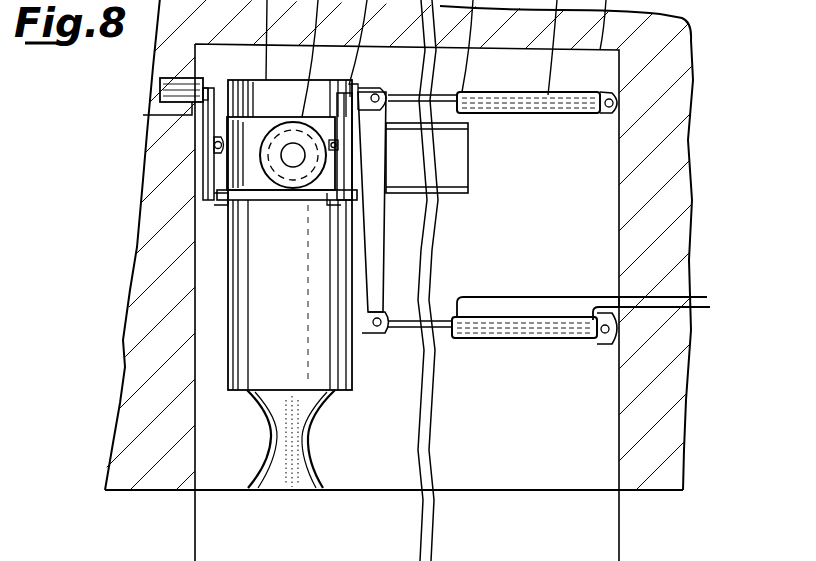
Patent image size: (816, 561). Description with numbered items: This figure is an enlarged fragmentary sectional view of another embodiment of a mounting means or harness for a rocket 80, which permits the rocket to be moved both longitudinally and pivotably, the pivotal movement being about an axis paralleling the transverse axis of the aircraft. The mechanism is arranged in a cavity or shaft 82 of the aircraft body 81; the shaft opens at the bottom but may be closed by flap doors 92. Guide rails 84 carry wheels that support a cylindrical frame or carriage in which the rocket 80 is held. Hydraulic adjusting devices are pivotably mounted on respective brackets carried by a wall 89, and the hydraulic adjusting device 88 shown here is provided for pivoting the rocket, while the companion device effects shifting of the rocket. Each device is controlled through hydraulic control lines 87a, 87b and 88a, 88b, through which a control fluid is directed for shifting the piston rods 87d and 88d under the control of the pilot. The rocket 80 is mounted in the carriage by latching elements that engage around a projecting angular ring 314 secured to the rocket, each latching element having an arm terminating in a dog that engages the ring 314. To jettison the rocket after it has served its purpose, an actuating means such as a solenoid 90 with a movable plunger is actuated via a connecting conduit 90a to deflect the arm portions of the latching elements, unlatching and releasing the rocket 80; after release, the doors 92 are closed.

The rocket 80 is at (237, 252).
The aircraft body 81 is at (678, 58).
The cavity or shaft 82 is at (563, 251).
The guide rail 84 is at (458, 162).
The hydraulic control line 87a is at (475, 68).
The hydraulic control line 87b is at (600, 57).
The piston rod 87d is at (403, 95).
The hydraulic adjusting device 88 is at (548, 332).
The hydraulic control line 88a is at (503, 297).
The hydraulic control line 88b is at (693, 309).
The piston rod 88d is at (440, 330).
The wall 89 is at (620, 268).
The solenoid 90 is at (167, 90).
The connecting conduit 90a is at (178, 103).
The flap door 92 is at (618, 553).
The projecting angular ring 314 is at (268, 192).